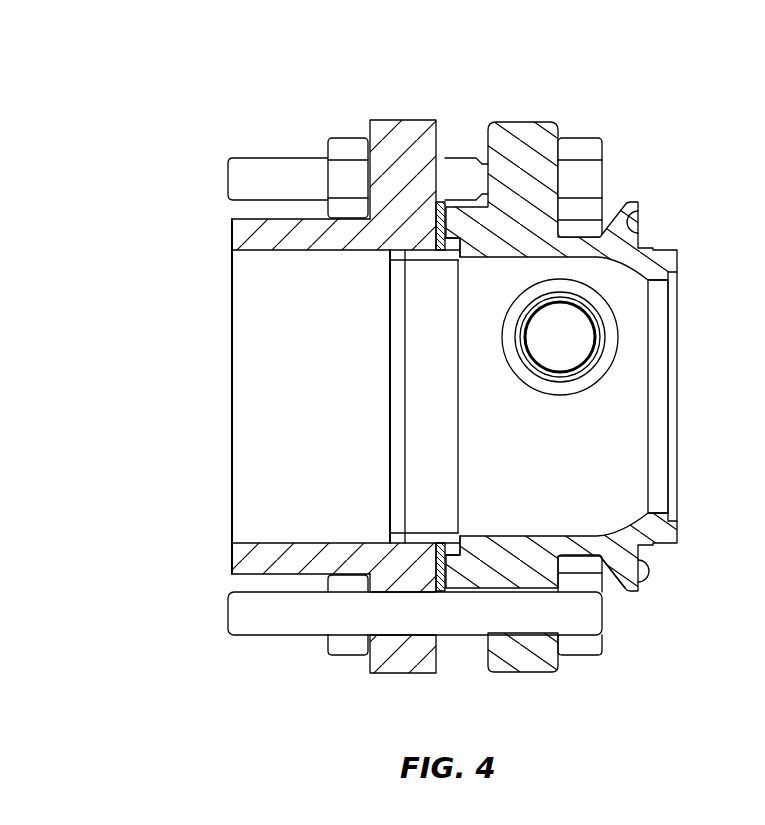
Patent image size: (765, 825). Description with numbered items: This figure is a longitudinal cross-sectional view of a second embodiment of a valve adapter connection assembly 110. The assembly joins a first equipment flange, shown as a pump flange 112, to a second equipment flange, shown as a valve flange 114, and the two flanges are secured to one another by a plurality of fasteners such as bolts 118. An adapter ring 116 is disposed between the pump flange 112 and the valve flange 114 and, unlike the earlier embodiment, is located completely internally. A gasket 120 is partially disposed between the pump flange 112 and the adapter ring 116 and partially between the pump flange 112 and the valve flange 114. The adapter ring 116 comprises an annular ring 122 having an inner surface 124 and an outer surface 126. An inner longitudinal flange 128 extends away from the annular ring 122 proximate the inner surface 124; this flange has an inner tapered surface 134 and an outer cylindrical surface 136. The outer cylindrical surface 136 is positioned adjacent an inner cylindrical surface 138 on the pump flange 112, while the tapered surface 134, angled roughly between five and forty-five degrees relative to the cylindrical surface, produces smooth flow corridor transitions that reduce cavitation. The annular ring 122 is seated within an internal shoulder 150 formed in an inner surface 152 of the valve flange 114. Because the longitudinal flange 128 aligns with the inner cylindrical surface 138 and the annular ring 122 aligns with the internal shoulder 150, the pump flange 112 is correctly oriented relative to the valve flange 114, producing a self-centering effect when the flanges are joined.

The valve adapter connection assembly 110 is at (128, 117).
The pump flange 112 is at (392, 127).
The valve flange 114 is at (542, 142).
The adapter ring 116 is at (420, 358).
The bolts 118 is at (258, 157).
The gasket 120 is at (445, 203).
The annular ring 122 is at (468, 248).
The inner surface 124 is at (443, 262).
The outer surface 126 is at (453, 228).
The inner longitudinal flange 128 is at (480, 370).
The tapered surface 134 is at (390, 262).
The outer cylindrical surface 136 is at (417, 250).
The inner cylindrical surface 138 is at (273, 250).
The internal shoulder 150 is at (478, 537).
The inner surface 152 is at (642, 525).